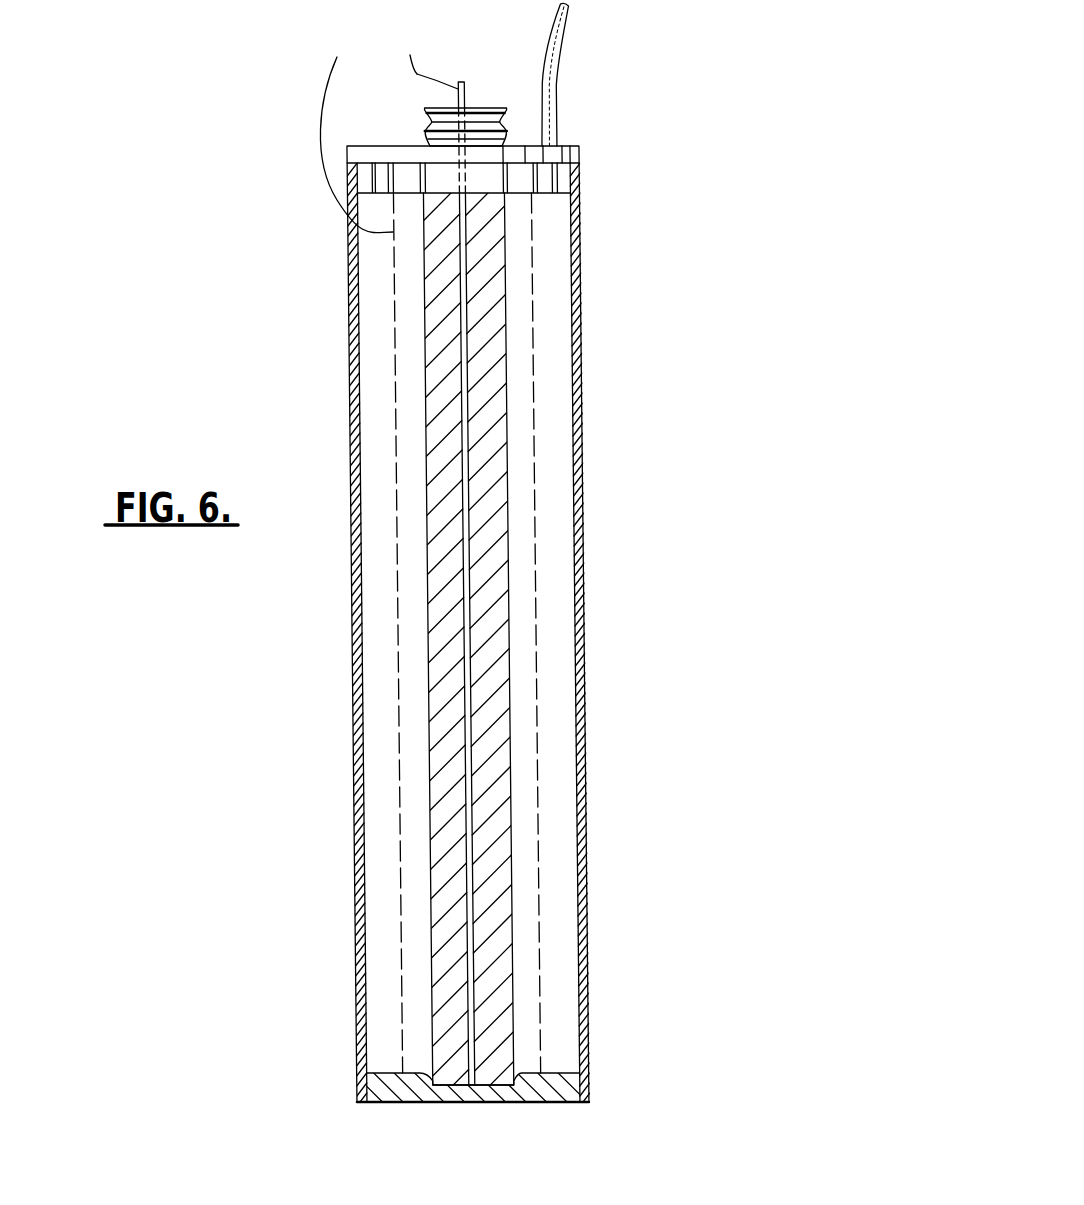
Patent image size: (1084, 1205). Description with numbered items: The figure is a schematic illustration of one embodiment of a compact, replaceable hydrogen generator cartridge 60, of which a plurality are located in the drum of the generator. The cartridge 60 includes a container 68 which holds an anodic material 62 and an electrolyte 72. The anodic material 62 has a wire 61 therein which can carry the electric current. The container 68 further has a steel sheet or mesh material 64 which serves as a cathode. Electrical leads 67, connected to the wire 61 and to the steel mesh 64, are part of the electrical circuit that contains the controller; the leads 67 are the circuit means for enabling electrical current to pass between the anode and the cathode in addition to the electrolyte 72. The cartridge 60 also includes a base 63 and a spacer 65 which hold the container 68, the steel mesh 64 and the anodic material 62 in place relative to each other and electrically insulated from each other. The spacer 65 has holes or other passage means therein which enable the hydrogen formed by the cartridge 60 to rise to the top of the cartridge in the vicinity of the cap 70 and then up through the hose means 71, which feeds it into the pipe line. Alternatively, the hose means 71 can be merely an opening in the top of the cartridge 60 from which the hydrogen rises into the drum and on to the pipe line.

The cartridge 60 is at (340, 912).
The wire 61 is at (470, 917).
The anodic material 62 is at (498, 747).
The base 63 is at (562, 1085).
The steel sheet or mesh material 64 is at (533, 592).
The spacer 65 is at (558, 178).
The electrical leads 67 is at (417, 74).
The container 68 is at (582, 443).
The cap 70 is at (578, 144).
The hose means 71 is at (553, 88).
The electrolyte 72 is at (549, 348).